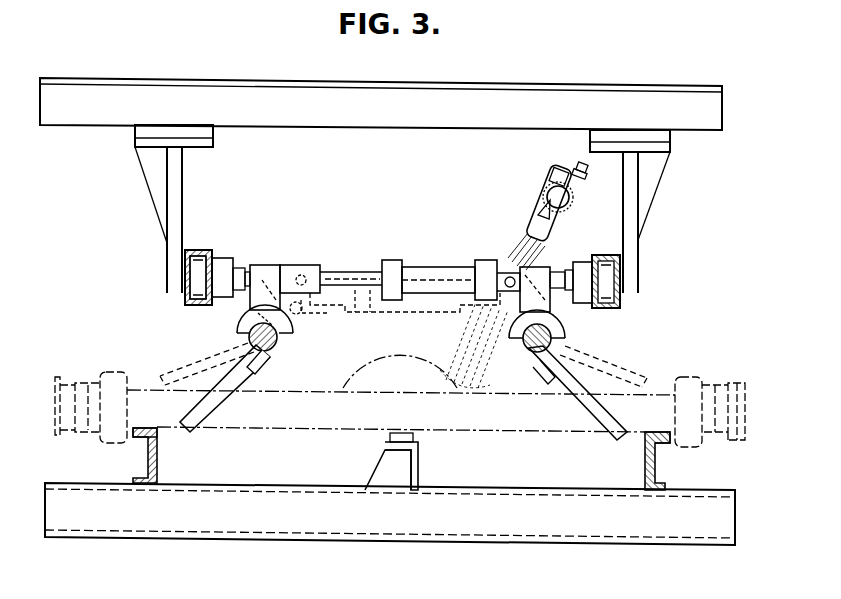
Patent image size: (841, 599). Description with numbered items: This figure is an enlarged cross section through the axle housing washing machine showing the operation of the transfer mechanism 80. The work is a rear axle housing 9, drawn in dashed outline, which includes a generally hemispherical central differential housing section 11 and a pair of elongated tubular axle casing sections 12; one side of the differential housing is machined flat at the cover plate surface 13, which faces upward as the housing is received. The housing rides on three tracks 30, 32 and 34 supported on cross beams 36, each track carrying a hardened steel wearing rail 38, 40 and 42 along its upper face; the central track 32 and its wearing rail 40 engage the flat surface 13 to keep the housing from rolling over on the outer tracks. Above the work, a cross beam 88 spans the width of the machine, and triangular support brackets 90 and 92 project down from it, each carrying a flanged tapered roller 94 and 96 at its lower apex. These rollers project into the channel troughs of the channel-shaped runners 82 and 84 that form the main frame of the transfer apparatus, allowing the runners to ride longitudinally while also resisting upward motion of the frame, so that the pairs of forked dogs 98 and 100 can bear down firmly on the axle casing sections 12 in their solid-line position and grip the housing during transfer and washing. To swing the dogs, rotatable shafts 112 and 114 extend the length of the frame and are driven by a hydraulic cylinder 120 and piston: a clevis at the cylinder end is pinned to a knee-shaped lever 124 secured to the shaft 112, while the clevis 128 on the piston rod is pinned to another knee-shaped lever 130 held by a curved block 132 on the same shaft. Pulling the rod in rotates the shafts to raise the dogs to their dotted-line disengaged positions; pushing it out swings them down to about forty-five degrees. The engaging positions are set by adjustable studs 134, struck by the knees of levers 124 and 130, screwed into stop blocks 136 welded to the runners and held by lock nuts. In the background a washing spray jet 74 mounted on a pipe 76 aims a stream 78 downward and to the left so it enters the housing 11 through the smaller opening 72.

The cross beam 88 is at (555, 100).
The transfer mechanism 80 is at (330, 183).
The triangular support bracket 90 is at (185, 185).
The triangular support bracket 92 is at (645, 205).
The channel-shaped runner 82 is at (205, 251).
The flanged tapered roller 94 is at (186, 298).
The stop block 136 is at (230, 247).
The adjustable stud 134 is at (249, 271).
The knee-shaped lever 130 is at (285, 254).
The clevis 128 is at (311, 268).
The hydraulic cylinder 120 is at (426, 267).
The knee-shaped lever 124 is at (548, 264).
The washing spray jet 74 is at (533, 220).
The pipe 76 is at (573, 195).
The flanged tapered roller 96 is at (615, 300).
The channel-shaped runner 84 is at (600, 307).
The rotatable shaft 112 is at (246, 330).
The curved block 132 is at (295, 333).
The forked dog 98 is at (236, 373).
The rotatable shaft 114 is at (566, 375).
The forked dog 100 is at (640, 364).
The smaller opening 72 is at (474, 345).
The stream 78 is at (440, 339).
The differential housing section 11 is at (405, 395).
The axle casing section 12 is at (244, 419).
The cross beam 36 is at (608, 528).
The track 30 is at (158, 465).
The wearing rail 38 is at (158, 436).
The central track 32 is at (419, 464).
The wearing rail 40 is at (391, 441).
The track 34 is at (645, 468).
The wearing rail 42 is at (645, 437).
The rear axle housing 9 is at (293, 440).
The flat cover plate surface 13 is at (455, 437).